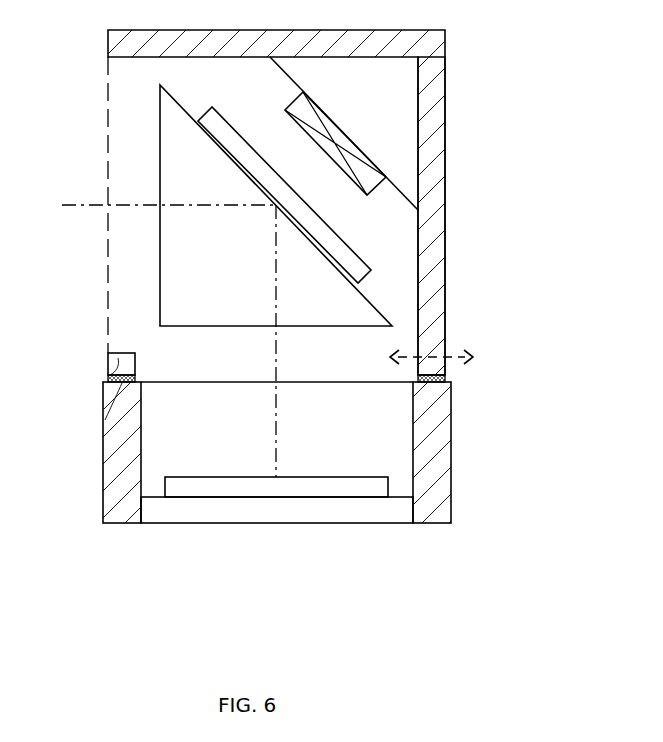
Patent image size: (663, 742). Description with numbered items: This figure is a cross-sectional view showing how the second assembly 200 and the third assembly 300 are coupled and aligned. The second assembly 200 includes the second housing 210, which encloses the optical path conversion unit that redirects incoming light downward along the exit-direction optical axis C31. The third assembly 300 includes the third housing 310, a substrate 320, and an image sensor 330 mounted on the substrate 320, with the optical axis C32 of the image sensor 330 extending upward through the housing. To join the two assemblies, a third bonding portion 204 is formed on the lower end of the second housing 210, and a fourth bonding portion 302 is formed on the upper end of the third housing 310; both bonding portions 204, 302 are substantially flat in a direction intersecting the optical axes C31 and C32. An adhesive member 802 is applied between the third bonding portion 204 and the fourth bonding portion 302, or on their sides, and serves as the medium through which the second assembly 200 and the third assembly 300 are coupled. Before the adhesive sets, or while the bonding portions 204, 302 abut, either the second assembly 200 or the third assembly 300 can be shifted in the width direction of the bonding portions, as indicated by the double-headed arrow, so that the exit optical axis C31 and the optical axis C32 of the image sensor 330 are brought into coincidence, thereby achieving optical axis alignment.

The second assembly 200 is at (339, 202).
The second housing 210 is at (446, 77).
The third bonding portion 204 is at (118, 364).
The adhesive member 802 is at (107, 380).
The third assembly 300 is at (295, 482).
The fourth bonding portion 302 is at (103, 418).
The third housing 310 is at (432, 501).
The substrate 320 is at (232, 503).
The image sensor 330 is at (320, 488).
The optical axis in the exit direction of the second optical path conversion unit C31 is at (276, 288).
The optical axis of the image sensor C32 is at (276, 452).